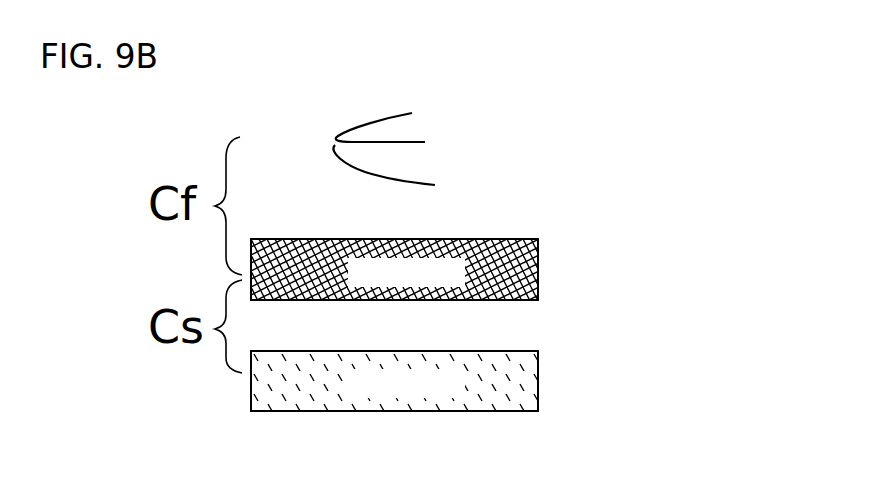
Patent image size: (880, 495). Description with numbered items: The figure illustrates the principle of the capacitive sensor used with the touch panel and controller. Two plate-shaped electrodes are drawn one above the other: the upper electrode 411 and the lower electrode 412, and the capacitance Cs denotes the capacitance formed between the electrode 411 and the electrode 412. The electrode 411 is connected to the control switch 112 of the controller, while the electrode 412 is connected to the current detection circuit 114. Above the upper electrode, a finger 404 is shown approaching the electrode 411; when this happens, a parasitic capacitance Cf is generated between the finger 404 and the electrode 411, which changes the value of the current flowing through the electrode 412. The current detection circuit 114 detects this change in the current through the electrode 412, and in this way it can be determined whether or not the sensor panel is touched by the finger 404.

The finger 404 is at (417, 155).
The control switch 112 is at (538, 268).
The current detection circuit 114 is at (538, 381).
The electrode 411 is at (538, 239).
The electrode 412 is at (538, 411).